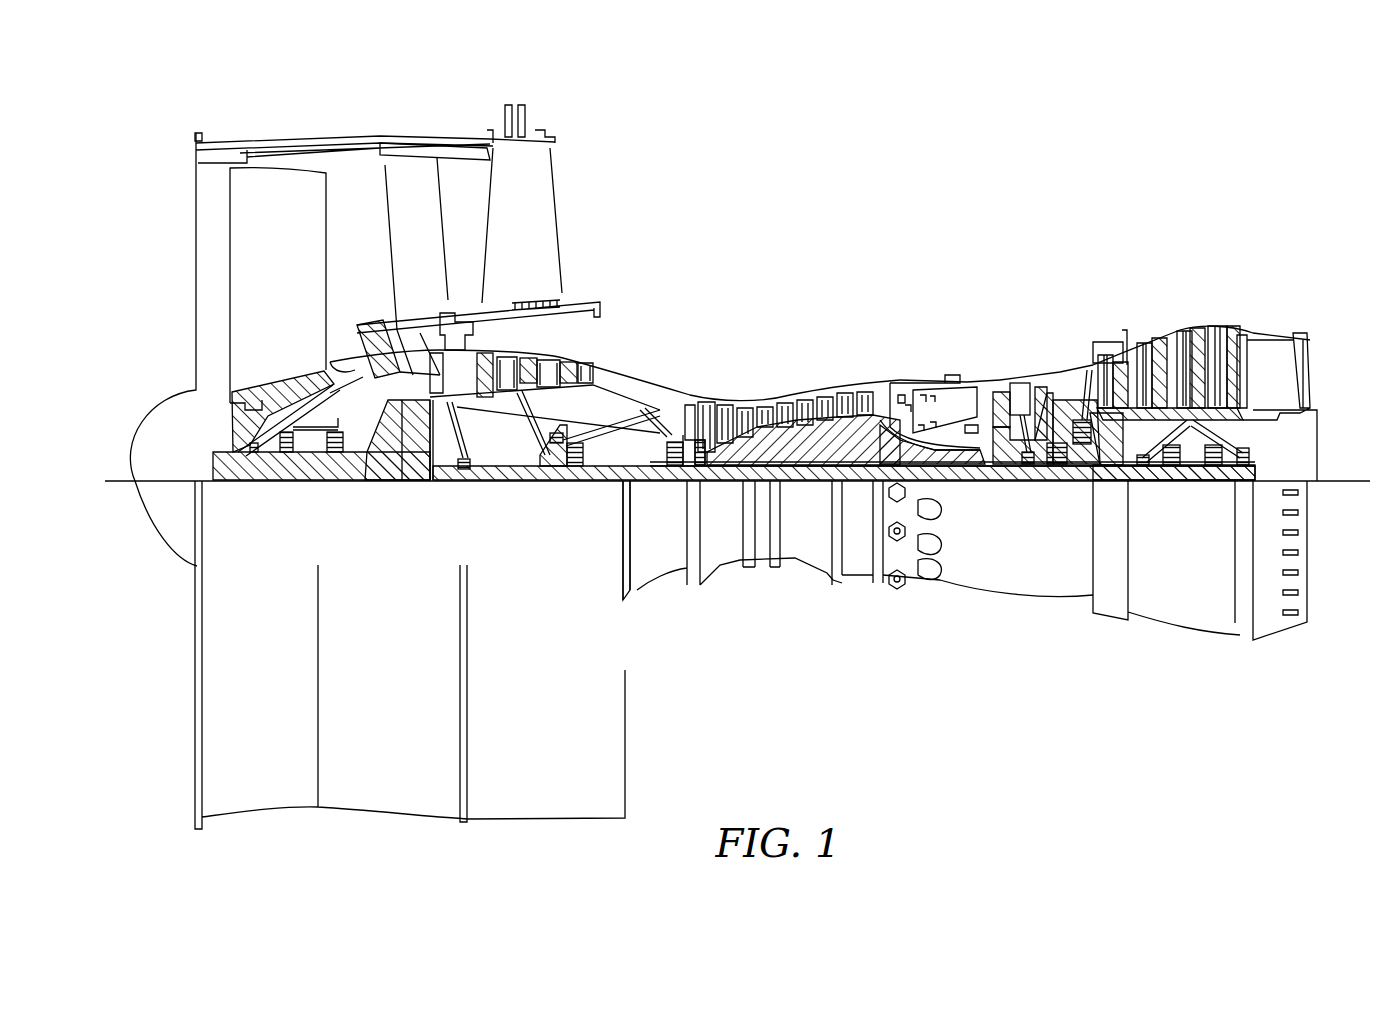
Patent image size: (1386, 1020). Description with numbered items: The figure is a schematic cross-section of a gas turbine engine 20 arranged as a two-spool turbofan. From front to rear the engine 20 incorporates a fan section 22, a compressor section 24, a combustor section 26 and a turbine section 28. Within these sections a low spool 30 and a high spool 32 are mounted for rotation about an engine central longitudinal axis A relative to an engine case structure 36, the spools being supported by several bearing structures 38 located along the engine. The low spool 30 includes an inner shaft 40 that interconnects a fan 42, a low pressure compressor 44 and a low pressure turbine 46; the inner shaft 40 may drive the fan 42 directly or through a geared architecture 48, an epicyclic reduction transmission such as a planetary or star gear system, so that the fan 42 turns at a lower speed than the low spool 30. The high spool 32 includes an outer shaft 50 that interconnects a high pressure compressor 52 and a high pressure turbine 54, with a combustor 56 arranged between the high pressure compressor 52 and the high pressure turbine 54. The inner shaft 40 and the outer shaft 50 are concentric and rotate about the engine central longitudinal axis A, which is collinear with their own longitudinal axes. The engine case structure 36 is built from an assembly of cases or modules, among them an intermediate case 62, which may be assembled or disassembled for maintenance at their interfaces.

The gas turbine engine 20 is at (1080, 167).
The fan section 22 is at (187, 118).
The compressor section 24 is at (470, 263).
The combustor section 26 is at (1005, 263).
The turbine section 28 is at (1242, 263).
The low spool 30 is at (810, 483).
The high spool 32 is at (858, 442).
The engine case structure 36 is at (861, 578).
The bearing structures 38 is at (1010, 330).
The inner shaft 40 is at (645, 485).
The fan 42 is at (265, 322).
The low pressure compressor 44 is at (548, 354).
The low pressure turbine 46 is at (1150, 352).
The geared architecture 48 is at (412, 455).
The outer shaft 50 is at (936, 458).
The high pressure compressor 52 is at (787, 430).
The high pressure turbine 54 is at (1014, 378).
The combustor 56 is at (945, 402).
The intermediate case 62 is at (700, 485).
The engine central longitudinal axis A is at (1340, 479).